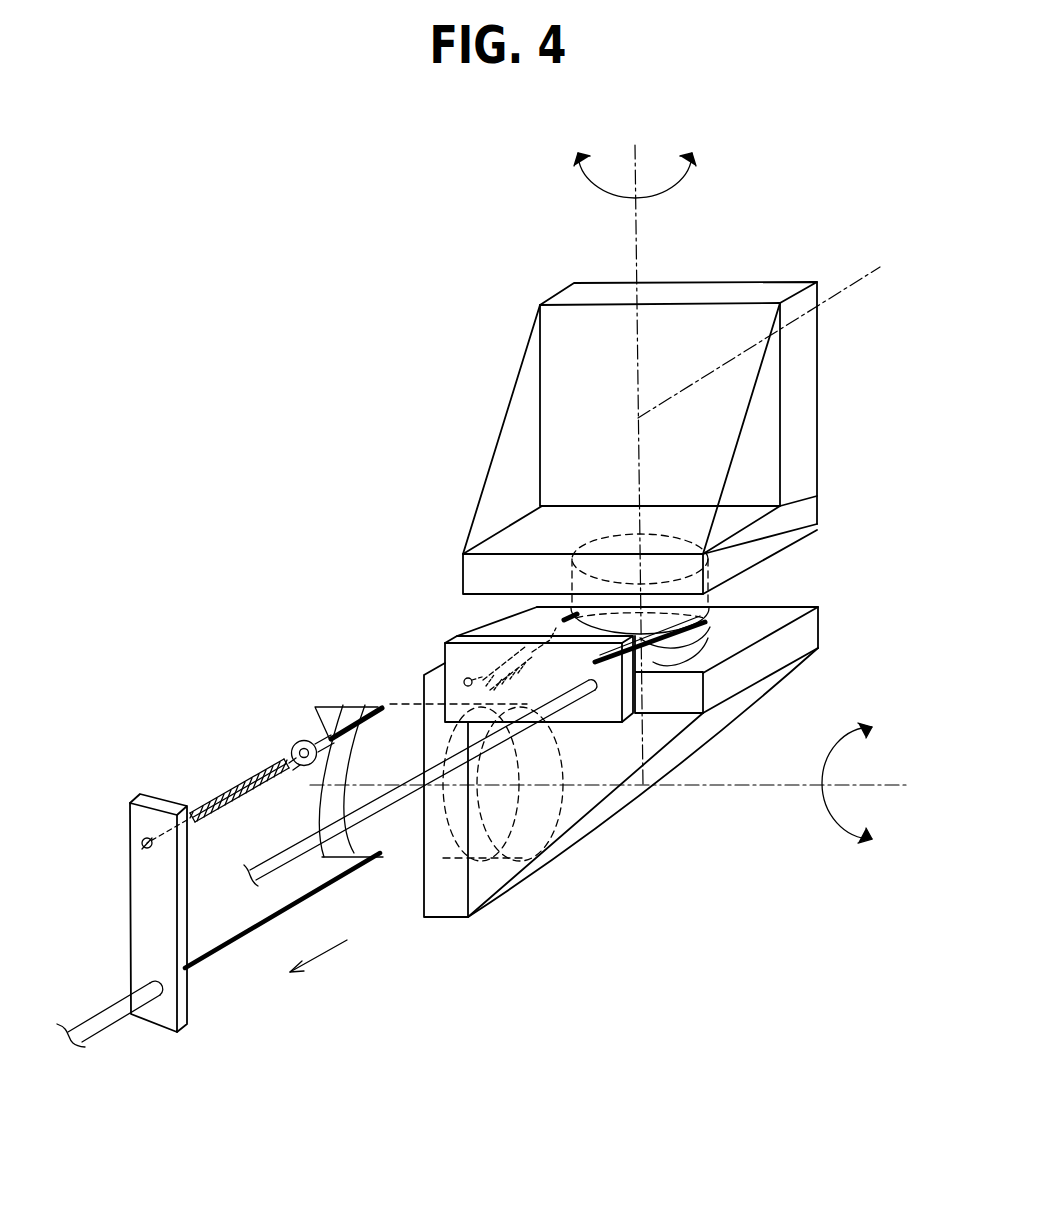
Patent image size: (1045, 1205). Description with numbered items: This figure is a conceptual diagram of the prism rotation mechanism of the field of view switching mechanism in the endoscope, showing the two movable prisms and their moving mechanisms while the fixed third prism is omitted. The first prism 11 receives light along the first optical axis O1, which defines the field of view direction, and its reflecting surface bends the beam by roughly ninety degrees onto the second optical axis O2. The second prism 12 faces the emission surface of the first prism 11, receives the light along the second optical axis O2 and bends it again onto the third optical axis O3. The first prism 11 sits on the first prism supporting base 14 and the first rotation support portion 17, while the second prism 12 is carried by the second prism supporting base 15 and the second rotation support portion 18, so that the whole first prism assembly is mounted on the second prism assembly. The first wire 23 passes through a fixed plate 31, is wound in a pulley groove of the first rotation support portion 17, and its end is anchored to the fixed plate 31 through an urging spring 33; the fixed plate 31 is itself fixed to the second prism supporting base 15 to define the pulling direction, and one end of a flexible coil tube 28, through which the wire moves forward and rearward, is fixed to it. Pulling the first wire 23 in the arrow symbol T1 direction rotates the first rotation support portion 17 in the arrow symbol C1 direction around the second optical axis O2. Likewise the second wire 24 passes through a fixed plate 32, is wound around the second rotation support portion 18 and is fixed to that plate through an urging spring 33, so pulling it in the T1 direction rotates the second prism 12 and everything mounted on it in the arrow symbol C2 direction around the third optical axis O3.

The first prism 11 is at (573, 355).
The second prism 12 is at (493, 872).
The first prism supporting base 14 is at (802, 485).
The second prism supporting base 15 is at (815, 632).
The first rotation support portion 17 is at (708, 605).
The second rotation support portion 18 is at (393, 705).
The first wire 23 is at (668, 646).
The second wire 24 is at (210, 957).
The coil tube 28 is at (390, 775).
The fixed plate 31 is at (447, 640).
The fixed plate 32 is at (148, 800).
The urging spring 33 is at (473, 637).
The first optical axis O1 is at (708, 373).
The second optical axis O2 is at (642, 460).
The third optical axis O3 is at (580, 787).
The arrow symbol C1 direction C1 is at (667, 195).
The arrow symbol C2 direction C2 is at (832, 828).
The arrow symbol T1 direction T1 is at (327, 952).